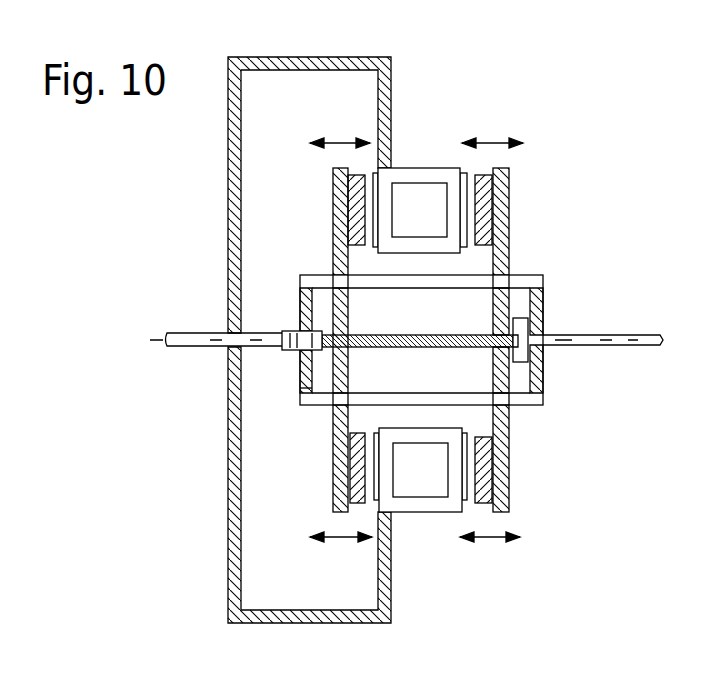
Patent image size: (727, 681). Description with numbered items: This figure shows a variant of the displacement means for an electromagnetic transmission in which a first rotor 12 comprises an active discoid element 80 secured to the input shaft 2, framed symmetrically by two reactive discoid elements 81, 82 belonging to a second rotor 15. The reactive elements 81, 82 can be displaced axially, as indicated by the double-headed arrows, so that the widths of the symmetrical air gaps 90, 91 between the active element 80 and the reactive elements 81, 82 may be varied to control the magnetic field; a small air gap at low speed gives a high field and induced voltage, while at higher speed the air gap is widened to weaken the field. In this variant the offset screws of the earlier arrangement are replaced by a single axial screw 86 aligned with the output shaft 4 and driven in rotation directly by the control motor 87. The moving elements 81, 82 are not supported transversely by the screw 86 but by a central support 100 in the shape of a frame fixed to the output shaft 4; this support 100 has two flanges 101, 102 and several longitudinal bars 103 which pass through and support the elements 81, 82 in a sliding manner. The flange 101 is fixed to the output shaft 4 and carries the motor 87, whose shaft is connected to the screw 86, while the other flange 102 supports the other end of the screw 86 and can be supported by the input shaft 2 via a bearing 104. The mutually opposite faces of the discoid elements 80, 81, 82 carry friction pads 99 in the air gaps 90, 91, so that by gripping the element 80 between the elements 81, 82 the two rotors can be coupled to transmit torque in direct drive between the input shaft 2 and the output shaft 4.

The first rotor 12 is at (267, 30).
The input shaft 2 is at (200, 333).
The output shaft 4 is at (641, 335).
The second rotor 15 is at (437, 183).
The active discoid element 80 is at (412, 175).
The reactive discoid element 81 is at (346, 192).
The reactive discoid element 82 is at (510, 185).
The axial screw 86 is at (415, 348).
The control motor 87 is at (525, 332).
The air gap 90 is at (373, 178).
The air gap 91 is at (468, 185).
The friction pads 99 is at (350, 497).
The central support 100 is at (470, 376).
The flange 101 is at (540, 396).
The flange 102 is at (300, 386).
The longitudinal bars 103 is at (517, 282).
The bearing 104 is at (288, 356).